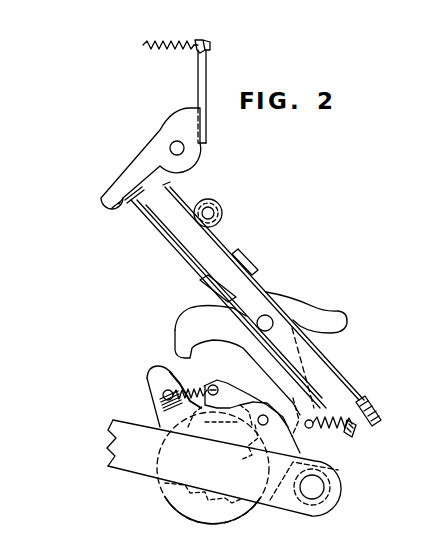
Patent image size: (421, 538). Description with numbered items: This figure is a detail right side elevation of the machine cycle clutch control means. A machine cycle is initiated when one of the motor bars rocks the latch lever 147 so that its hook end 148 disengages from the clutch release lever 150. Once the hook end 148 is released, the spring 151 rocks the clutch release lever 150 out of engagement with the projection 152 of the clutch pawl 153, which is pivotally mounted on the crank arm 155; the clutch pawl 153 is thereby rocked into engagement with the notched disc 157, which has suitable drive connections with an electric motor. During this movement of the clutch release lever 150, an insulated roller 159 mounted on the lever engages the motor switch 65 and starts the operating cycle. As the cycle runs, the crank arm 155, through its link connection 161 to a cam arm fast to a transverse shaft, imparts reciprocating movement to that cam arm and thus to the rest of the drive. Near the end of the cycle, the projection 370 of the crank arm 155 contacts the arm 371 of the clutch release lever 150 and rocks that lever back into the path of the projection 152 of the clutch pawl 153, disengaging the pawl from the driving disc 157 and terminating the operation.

The motor switch 65 is at (323, 362).
The latch lever 147 is at (166, 127).
The hook end 148 is at (121, 204).
The clutch release lever 150 is at (340, 448).
The spring 151 is at (354, 430).
The projection 152 is at (268, 506).
The clutch pawl 153 is at (238, 361).
The crank arm 155 is at (226, 514).
The notched disc 157 is at (188, 500).
The insulated roller 159 is at (222, 214).
The link connection 161 is at (147, 380).
The projection 370 is at (147, 380).
The arm 371 is at (183, 356).